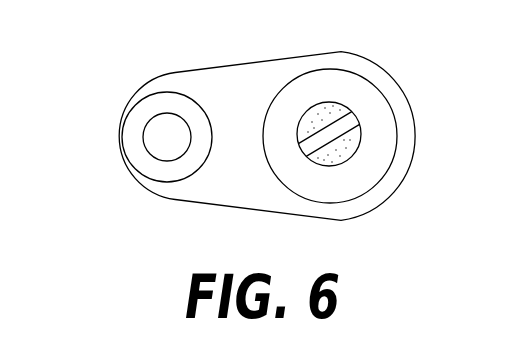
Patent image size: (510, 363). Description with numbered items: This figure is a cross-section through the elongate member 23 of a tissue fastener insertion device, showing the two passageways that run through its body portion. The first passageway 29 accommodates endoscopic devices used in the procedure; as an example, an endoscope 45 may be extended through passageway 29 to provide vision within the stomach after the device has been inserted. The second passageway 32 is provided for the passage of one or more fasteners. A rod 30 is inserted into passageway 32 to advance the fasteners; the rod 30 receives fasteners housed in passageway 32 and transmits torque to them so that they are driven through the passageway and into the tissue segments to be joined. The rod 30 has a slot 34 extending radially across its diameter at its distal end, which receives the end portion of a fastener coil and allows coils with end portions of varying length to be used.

The elongate member 23 is at (112, 135).
The first passageway 29 is at (167, 102).
The endoscope 45 is at (166, 150).
The second passageway 32 is at (362, 179).
The rod 30 is at (362, 148).
The slot 34 is at (352, 120).